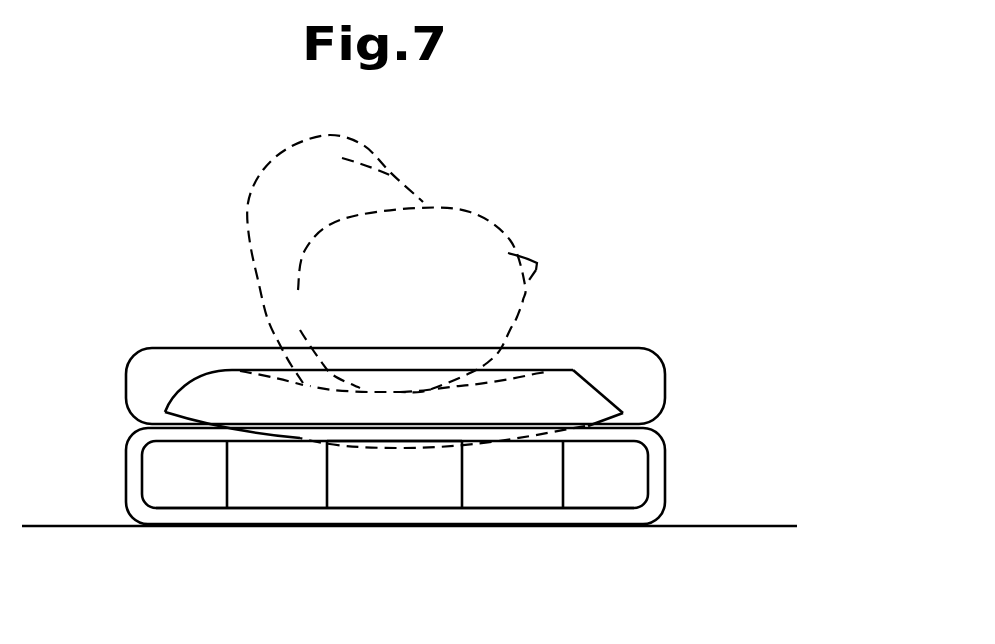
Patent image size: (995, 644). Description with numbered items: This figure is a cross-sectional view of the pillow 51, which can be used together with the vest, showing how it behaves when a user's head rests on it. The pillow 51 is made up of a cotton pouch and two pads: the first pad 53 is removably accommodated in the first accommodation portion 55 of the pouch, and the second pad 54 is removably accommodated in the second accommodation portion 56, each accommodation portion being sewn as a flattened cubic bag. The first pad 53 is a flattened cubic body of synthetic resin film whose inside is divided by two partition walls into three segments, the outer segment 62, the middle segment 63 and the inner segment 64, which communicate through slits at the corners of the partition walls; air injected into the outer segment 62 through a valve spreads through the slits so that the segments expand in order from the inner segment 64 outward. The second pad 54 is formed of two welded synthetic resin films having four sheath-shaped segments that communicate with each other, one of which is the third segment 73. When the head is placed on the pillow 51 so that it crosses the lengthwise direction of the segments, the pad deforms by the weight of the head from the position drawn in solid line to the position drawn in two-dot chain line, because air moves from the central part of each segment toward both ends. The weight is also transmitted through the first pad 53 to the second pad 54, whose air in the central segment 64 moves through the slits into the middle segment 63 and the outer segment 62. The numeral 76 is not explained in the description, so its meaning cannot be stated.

The pillow 51 is at (170, 318).
The first pad 53 is at (648, 476).
The second pad 54 is at (613, 395).
The first accommodation portion 55 is at (663, 512).
The second accommodation portion 56 is at (632, 348).
The outer segment 62 is at (187, 498).
The middle segment 63 is at (270, 498).
The inner segment 64 is at (372, 498).
The third segment 73 is at (597, 418).
The plate inclined edge 76 is at (587, 373).